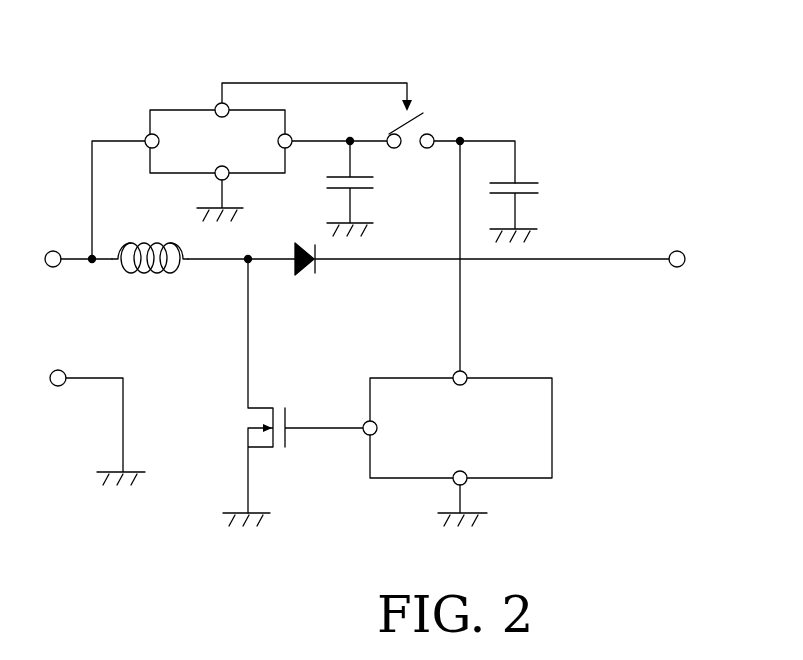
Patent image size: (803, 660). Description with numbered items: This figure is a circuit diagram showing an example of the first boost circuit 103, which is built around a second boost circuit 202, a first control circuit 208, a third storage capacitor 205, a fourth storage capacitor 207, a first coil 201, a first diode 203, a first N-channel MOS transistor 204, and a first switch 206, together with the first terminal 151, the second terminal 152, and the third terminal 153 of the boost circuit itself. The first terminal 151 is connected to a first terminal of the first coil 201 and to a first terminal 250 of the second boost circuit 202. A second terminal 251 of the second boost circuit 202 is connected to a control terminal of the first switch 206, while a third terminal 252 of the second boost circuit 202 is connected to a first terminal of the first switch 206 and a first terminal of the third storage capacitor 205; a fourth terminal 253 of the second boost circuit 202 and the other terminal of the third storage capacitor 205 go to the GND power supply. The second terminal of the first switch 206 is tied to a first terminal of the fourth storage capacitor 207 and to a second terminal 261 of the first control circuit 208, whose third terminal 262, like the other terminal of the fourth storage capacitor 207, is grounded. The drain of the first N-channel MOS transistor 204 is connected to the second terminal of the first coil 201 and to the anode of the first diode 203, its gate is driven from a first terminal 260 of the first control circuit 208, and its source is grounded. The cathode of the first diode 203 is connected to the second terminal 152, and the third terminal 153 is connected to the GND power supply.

The first boost circuit 103 is at (550, 88).
The first terminal 151 is at (56, 267).
The second terminal 152 is at (680, 268).
The third terminal 153 is at (64, 386).
The first coil 201 is at (152, 277).
The second boost circuit 202 is at (150, 118).
The first diode 203 is at (297, 273).
The first N-channel MOS transistor 204 is at (262, 449).
The third storage capacitor 205 is at (370, 189).
The first switch 206 is at (430, 132).
The fourth storage capacitor 207 is at (525, 197).
The first control circuit 208 is at (552, 428).
The first terminal 250 is at (146, 149).
The second terminal 251 is at (214, 105).
The third terminal 252 is at (291, 130).
The fourth terminal 253 is at (230, 178).
The first terminal 260 is at (365, 421).
The second terminal 261 is at (468, 368).
The third terminal 262 is at (472, 486).